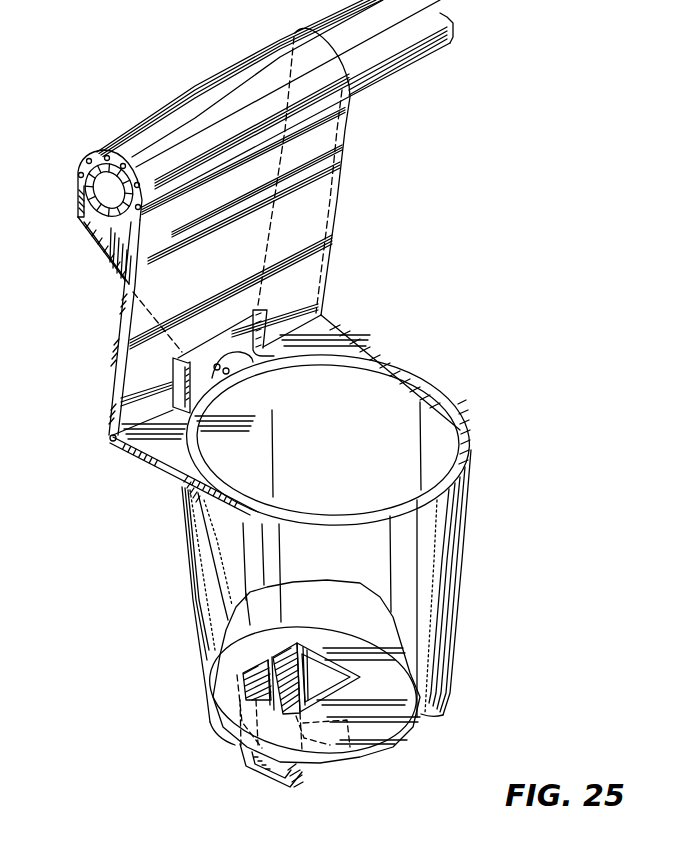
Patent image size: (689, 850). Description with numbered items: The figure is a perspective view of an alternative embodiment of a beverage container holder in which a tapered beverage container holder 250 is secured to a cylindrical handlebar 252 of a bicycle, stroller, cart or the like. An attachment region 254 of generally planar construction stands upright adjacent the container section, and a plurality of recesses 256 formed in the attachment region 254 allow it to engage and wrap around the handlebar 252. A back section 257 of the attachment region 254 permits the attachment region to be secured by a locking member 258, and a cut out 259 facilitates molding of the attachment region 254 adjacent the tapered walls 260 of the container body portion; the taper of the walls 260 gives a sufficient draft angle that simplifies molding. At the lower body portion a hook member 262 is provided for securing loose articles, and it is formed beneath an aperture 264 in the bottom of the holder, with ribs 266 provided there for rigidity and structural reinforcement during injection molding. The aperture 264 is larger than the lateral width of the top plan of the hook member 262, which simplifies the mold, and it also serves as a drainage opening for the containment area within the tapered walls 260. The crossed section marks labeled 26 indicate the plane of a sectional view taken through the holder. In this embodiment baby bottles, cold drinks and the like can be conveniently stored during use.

The tapered beverage container holder 250 is at (434, 607).
The cylindrical handlebar 252 is at (393, 60).
The attachment region 254 is at (313, 243).
The recesses 256 is at (93, 152).
The back section 257 is at (103, 250).
The locking member 258 is at (260, 353).
The cut out 259 is at (178, 387).
The tapered walls 260 is at (447, 703).
The hook member 262 is at (286, 786).
The aperture 264 is at (247, 682).
The ribs 266 is at (268, 658).
The section line 26- 26 is at (122, 280).